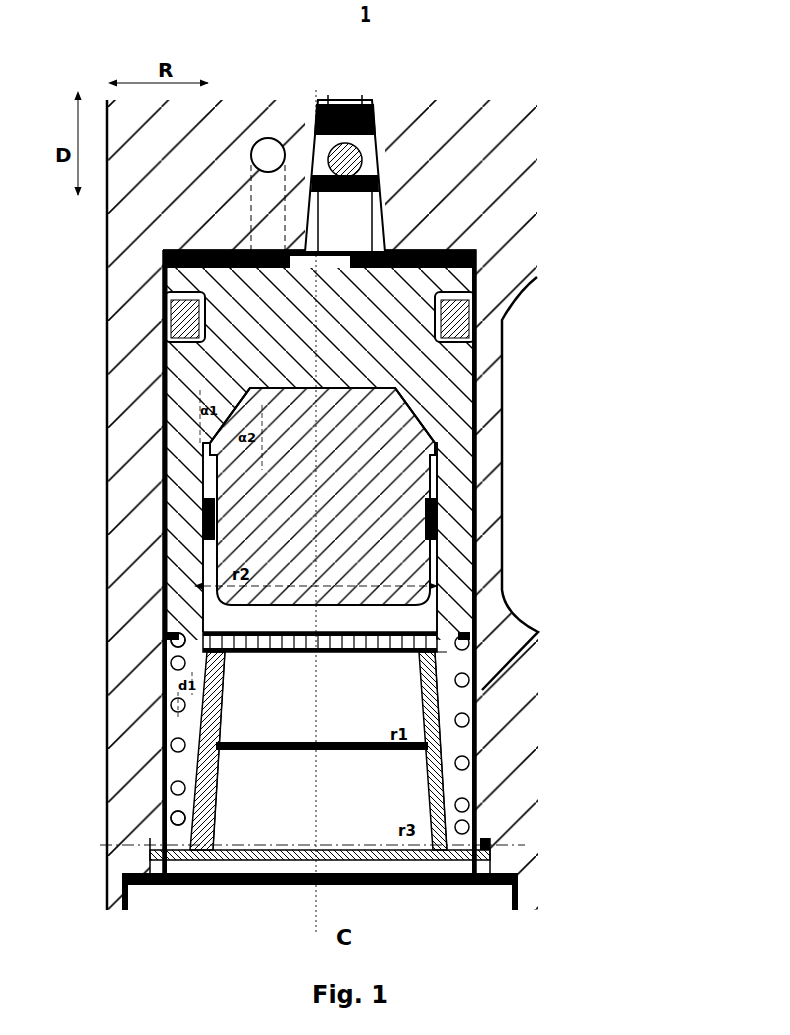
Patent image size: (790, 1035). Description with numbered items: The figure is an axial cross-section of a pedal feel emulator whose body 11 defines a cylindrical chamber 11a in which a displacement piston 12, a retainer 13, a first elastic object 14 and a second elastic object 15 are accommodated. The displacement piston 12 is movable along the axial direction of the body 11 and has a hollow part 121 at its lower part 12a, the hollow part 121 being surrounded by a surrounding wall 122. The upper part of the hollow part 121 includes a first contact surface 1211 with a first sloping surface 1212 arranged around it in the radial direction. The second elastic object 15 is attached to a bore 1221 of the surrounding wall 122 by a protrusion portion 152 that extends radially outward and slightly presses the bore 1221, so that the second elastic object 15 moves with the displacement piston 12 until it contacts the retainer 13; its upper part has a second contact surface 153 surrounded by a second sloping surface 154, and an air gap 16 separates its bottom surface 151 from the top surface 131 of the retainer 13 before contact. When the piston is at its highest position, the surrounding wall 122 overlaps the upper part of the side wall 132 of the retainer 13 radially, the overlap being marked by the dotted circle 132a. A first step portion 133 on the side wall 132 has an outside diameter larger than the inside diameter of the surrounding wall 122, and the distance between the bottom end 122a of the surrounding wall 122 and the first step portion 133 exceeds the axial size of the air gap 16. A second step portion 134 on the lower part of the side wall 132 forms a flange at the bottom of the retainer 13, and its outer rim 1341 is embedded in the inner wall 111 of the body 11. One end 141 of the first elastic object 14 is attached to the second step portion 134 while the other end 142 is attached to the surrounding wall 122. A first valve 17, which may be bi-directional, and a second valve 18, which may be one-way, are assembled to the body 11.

The body 11 is at (507, 163).
The chamber 11a is at (436, 250).
The displacement piston 12 is at (450, 352).
The lower part 12a is at (175, 545).
The hollow part 121 is at (430, 466).
The first contact surface 1211 is at (172, 302).
The first sloping surface 1212 is at (226, 396).
The surrounding wall 122 is at (466, 512).
The bore 1221 is at (436, 560).
The bottom end 122a is at (190, 660).
The retainer 13 is at (446, 795).
The top surface 131 is at (214, 628).
The side wall 132 is at (436, 702).
The circle 132a is at (494, 645).
The first step portion 133 is at (458, 738).
The second step portion 134 is at (144, 842).
The outer rim 1341 is at (492, 842).
The first elastic object 14 is at (458, 688).
The one end 141 is at (170, 820).
The other end 142 is at (164, 636).
The second elastic object 15 is at (402, 500).
The bottom surface 151 is at (478, 625).
The protrusion portion 152 is at (200, 512).
The second contact surface 153 is at (368, 386).
The second sloping surface 154 is at (406, 430).
The air gap 16 is at (287, 606).
The first valve 17 is at (272, 138).
The second valve 18 is at (388, 178).
The inner wall 111 is at (500, 878).